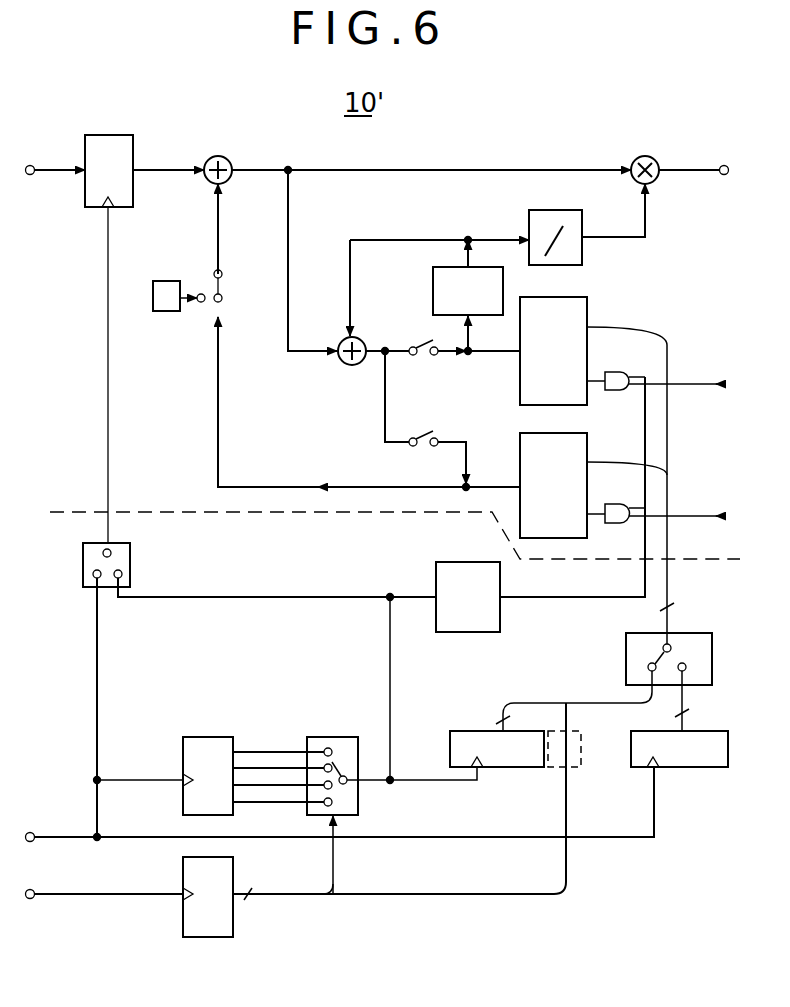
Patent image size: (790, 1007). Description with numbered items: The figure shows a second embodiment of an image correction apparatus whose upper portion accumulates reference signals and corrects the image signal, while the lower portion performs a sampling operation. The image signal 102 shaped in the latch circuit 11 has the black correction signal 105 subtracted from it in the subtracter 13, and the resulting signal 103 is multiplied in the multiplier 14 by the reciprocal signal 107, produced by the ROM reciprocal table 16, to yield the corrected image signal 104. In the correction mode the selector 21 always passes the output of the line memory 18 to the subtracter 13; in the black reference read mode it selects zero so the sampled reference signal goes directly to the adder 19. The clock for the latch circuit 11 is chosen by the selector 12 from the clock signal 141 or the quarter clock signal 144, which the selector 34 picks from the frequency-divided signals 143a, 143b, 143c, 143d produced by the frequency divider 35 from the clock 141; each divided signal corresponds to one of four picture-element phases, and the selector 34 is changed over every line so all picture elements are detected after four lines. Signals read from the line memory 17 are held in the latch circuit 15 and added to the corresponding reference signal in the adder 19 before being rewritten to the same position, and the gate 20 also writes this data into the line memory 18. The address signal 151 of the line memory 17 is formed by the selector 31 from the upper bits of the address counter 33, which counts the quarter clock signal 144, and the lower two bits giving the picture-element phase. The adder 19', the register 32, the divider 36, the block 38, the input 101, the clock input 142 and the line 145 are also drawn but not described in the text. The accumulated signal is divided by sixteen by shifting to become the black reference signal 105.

The latch circuit 11 is at (112, 135).
The selector 12 is at (130, 566).
The subtracter 13 is at (230, 160).
The multiplier 14 is at (647, 157).
The latch circuit 15 is at (429, 300).
The reciprocal table 16 is at (561, 213).
The line memory 17 is at (587, 305).
The line memory 18 is at (587, 435).
The adder 19 is at (443, 332).
The adder 19' is at (327, 267).
The gate 20 is at (424, 439).
The selector 21 is at (226, 296).
The selector 31 is at (694, 632).
The register 32 is at (712, 731).
The address counter 33 is at (470, 722).
The selector 34 is at (346, 737).
The frequency divider 35 is at (164, 758).
The counter 36 is at (201, 937).
The timing circuit 38 is at (464, 562).
The input terminal 101 is at (58, 169).
The image signal 102 is at (168, 169).
The resulting signal 103 is at (481, 170).
The corrected image signal 104 is at (686, 170).
The black correction signal 105 is at (222, 243).
The reciprocal signal 107 is at (645, 227).
The clock signal 141 is at (58, 833).
The clock input terminal 142 is at (98, 891).
The frequency-divided signal 143a is at (252, 746).
The frequency-divided signal 143b is at (282, 766).
The frequency-divided signal 143c is at (258, 786).
The frequency-divided signal 143d is at (295, 802).
The 1/4 clock signal 144 is at (390, 735).
The clock line 145 is at (373, 895).
The address signal 151 is at (669, 440).